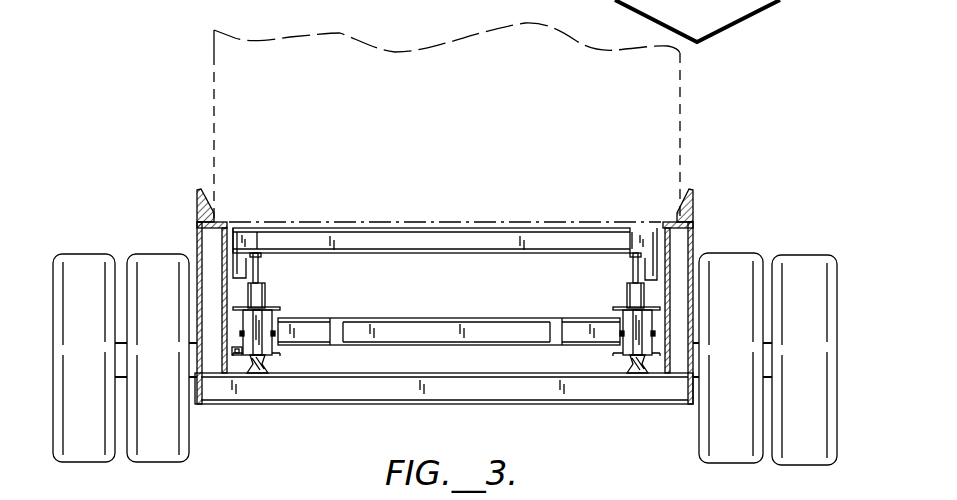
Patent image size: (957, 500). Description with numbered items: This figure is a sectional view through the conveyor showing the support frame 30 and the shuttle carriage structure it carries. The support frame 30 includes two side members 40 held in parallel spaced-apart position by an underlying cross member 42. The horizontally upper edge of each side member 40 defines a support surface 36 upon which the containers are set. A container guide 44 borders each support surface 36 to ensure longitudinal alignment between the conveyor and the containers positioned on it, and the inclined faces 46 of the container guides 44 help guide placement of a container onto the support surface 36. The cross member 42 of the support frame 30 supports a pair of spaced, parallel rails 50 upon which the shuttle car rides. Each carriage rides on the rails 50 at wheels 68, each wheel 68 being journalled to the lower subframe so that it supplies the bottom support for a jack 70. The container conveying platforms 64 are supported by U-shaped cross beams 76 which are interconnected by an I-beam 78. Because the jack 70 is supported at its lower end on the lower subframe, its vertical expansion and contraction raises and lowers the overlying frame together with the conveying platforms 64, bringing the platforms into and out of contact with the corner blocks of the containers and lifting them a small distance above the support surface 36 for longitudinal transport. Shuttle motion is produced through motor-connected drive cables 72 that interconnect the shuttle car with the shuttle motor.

The support frame 30 is at (541, 406).
The support surface 36 is at (222, 222).
The side member 40 is at (197, 250).
The cross member 42 is at (240, 404).
The container guide 44 is at (200, 193).
The inclined face 46 is at (215, 213).
The rail 50 is at (277, 362).
The conveying platform 64 is at (430, 228).
The wheel 68 is at (262, 322).
The jack 70 is at (267, 290).
The drive cable 72 is at (237, 357).
The U-shaped cross beam 76 is at (377, 248).
The I-beam 78 is at (263, 256).